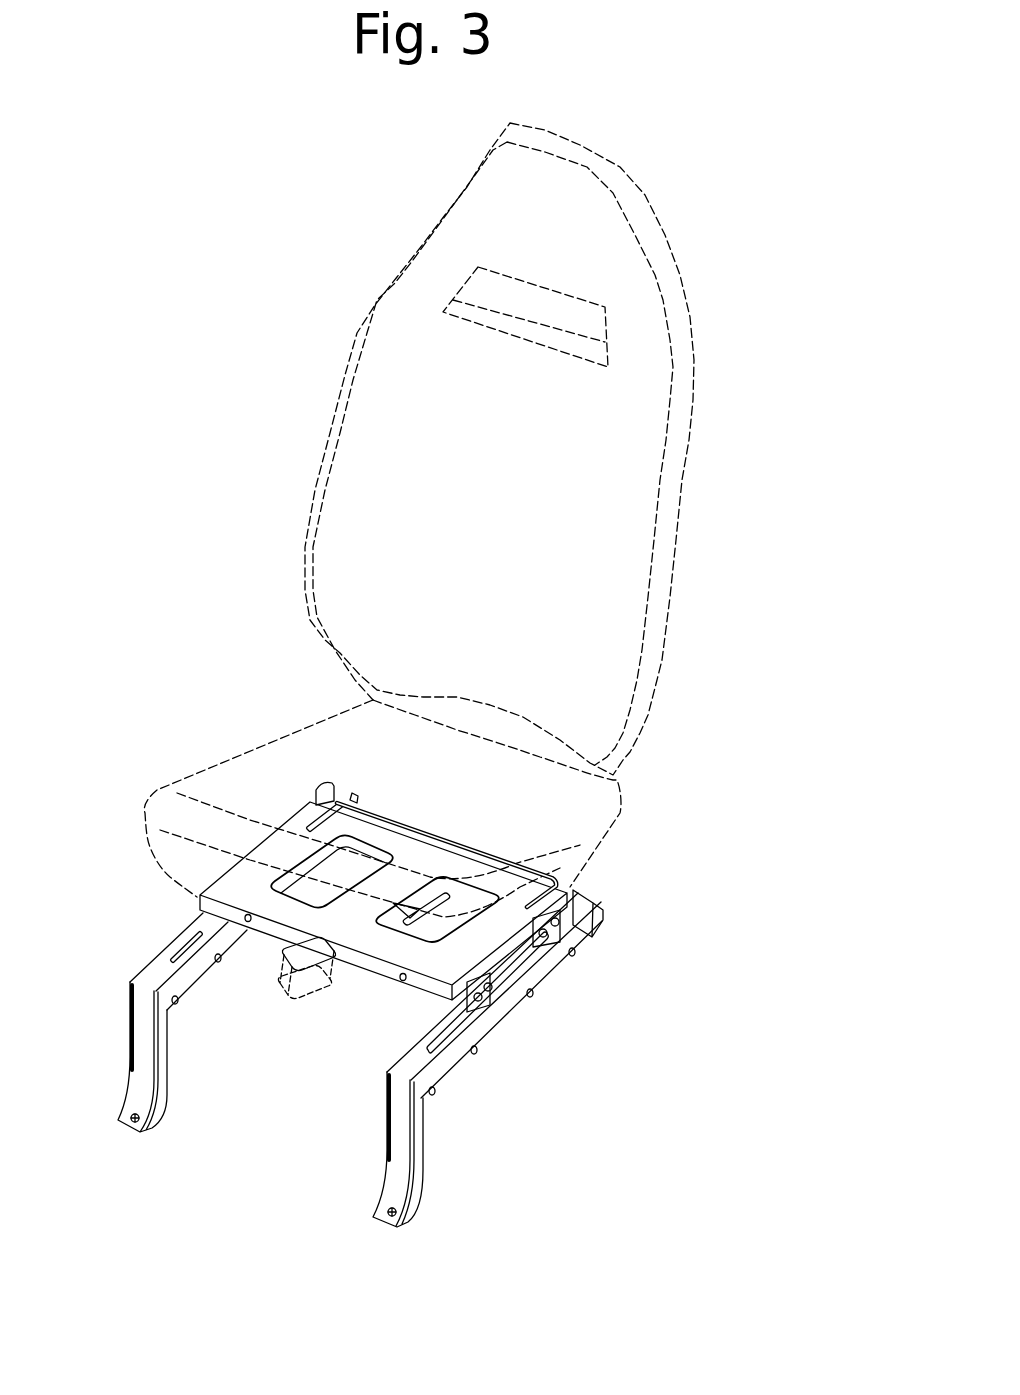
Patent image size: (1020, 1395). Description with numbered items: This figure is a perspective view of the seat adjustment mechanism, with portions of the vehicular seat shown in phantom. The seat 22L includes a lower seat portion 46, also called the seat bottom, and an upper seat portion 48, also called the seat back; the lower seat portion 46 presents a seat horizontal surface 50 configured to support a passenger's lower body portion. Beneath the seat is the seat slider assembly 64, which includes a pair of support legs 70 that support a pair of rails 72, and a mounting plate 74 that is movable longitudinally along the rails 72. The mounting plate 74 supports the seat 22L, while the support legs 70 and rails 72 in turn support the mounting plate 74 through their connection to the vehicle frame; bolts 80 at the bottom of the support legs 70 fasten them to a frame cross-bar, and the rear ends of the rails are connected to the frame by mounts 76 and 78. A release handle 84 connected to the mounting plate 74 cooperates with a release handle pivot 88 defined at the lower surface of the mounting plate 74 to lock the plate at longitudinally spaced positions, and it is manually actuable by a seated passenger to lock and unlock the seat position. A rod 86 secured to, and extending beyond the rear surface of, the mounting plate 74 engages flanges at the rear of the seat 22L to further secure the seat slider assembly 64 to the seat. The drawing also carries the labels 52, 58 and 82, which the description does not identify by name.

The seat 22L is at (696, 317).
The lower seat portion 46 is at (622, 777).
The upper seat portion 48 is at (679, 594).
The seat horizontal surface 50 is at (325, 750).
The seat cushion side 52 is at (240, 752).
The display panel 58 is at (523, 300).
The seat slider assembly 64 is at (377, 1008).
The support legs 70 is at (162, 1063).
The rails 72 is at (153, 972).
The mounting plate 74 is at (467, 870).
The mount 76 is at (335, 777).
The mount 78 is at (590, 893).
The bolts 80 is at (137, 1127).
The mounting hole 82 is at (180, 1002).
The release handle 84 is at (310, 973).
The rod 86 is at (440, 832).
The release handle pivot 88 is at (427, 913).